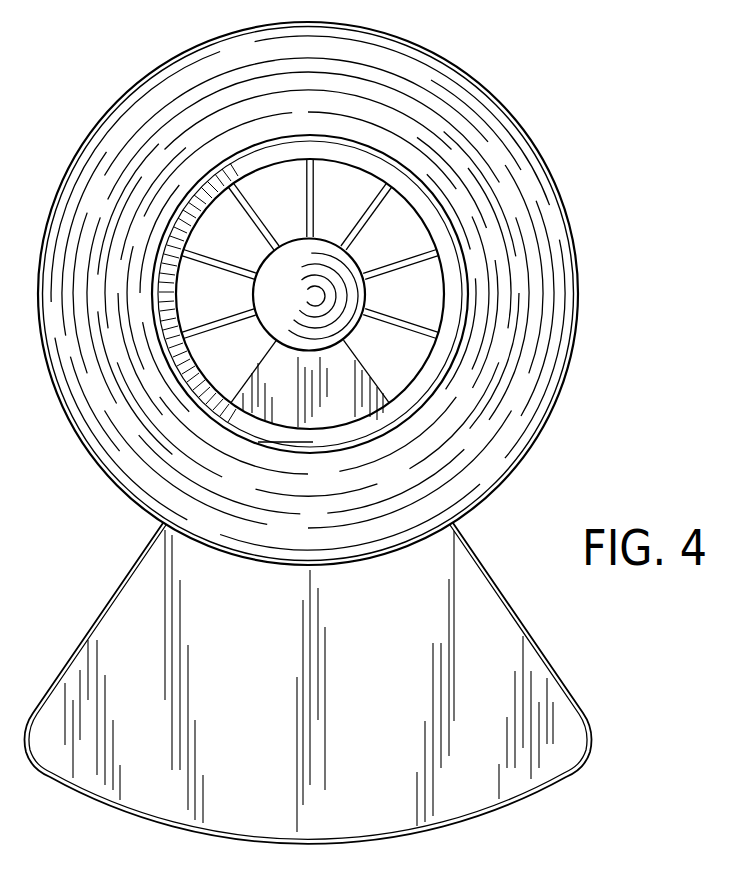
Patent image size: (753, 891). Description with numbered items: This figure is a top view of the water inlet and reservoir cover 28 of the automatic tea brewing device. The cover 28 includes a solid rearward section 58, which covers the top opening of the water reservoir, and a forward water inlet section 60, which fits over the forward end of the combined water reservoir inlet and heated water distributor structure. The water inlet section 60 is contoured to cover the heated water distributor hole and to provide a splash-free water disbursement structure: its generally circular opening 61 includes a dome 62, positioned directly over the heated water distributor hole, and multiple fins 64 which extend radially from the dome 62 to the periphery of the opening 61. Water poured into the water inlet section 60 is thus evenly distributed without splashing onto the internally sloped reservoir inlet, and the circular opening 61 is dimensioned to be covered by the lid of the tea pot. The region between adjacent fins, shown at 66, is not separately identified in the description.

The water inlet and reservoir cover 28 is at (319, 293).
The solid rearward section 58 is at (133, 638).
The forward water inlet section 60 is at (473, 122).
The circular opening 61 is at (446, 386).
The dome 62 is at (281, 300).
The fins 64 is at (251, 222).
The web 66 is at (332, 383).